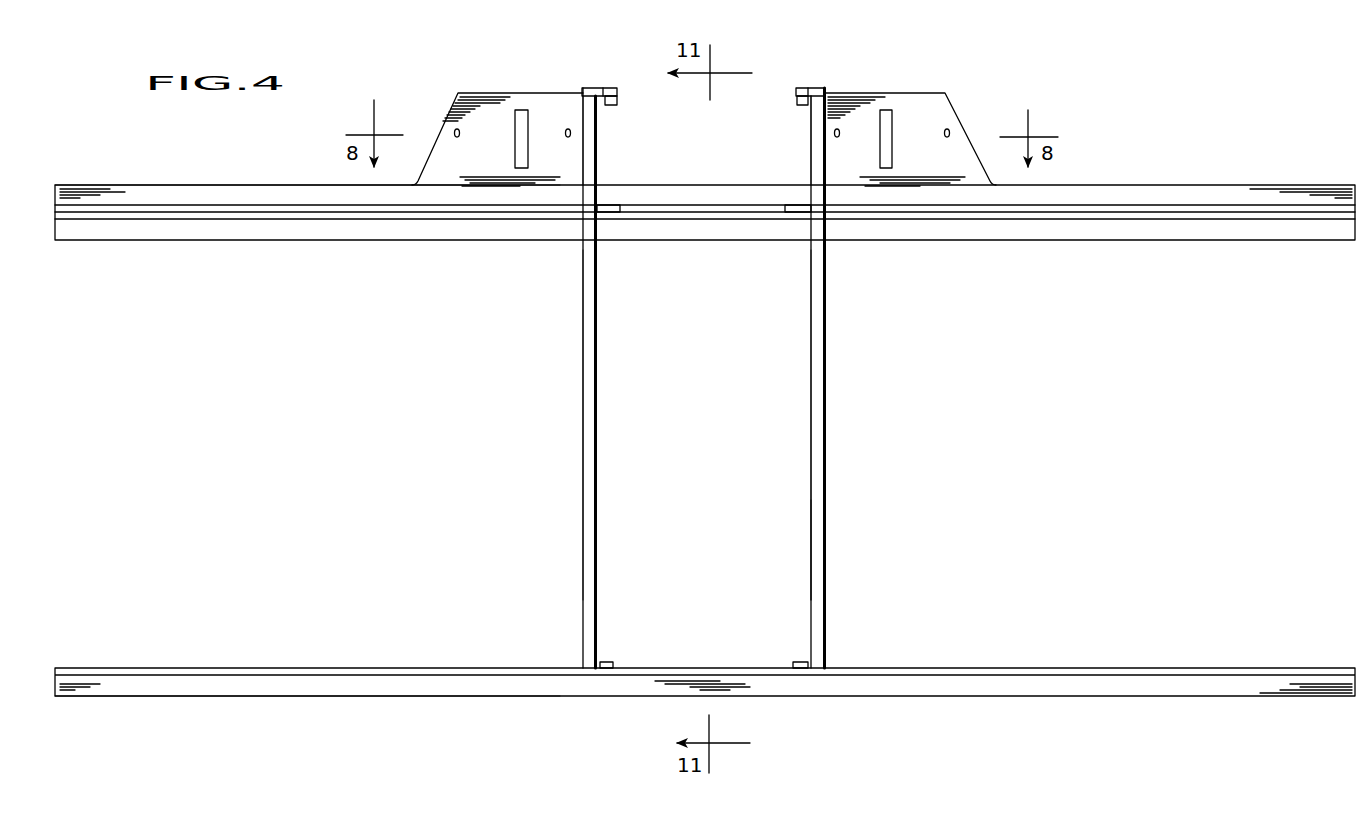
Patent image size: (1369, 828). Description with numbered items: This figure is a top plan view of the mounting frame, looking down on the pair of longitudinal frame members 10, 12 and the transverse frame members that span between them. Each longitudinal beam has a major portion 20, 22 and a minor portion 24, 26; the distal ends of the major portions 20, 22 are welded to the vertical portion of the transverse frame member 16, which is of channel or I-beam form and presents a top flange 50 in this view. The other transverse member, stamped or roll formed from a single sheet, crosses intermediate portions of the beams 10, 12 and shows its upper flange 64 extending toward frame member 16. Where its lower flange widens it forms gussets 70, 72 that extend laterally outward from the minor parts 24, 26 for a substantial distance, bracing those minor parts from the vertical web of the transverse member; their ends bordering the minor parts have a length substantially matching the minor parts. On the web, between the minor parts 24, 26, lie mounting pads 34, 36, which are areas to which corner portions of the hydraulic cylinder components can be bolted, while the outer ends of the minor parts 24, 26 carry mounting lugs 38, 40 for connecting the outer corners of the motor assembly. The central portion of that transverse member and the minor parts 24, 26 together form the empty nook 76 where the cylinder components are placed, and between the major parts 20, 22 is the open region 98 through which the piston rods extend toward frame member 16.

The longitudinal frame member 10 is at (827, 410).
The longitudinal frame member 12 is at (583, 442).
The transverse frame member 16 is at (439, 250).
The major portion 20 is at (820, 482).
The major portion 22 is at (585, 328).
The minor portion 24 is at (824, 172).
The minor portion 26 is at (590, 163).
The mounting pad 34 is at (797, 207).
The mounting pad 36 is at (618, 207).
The mounting lug 38 is at (810, 90).
The mounting lug 40 is at (598, 88).
The top flange 50 is at (268, 697).
The upper flange 64 is at (300, 233).
The gusset 70 is at (943, 113).
The gusset 72 is at (480, 120).
The nook 76 is at (748, 132).
The open region 98 is at (790, 541).